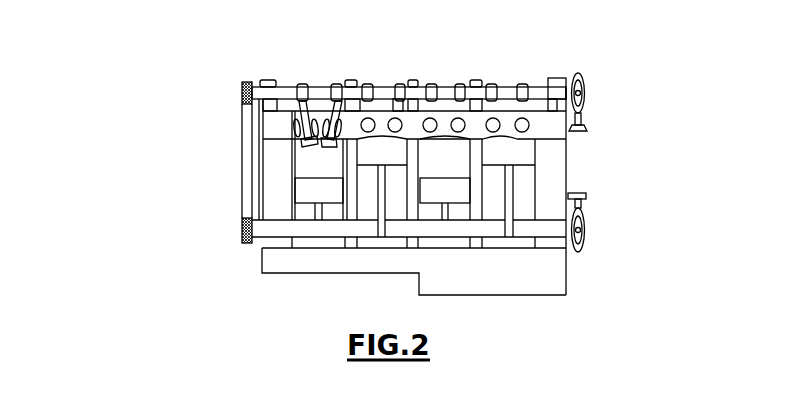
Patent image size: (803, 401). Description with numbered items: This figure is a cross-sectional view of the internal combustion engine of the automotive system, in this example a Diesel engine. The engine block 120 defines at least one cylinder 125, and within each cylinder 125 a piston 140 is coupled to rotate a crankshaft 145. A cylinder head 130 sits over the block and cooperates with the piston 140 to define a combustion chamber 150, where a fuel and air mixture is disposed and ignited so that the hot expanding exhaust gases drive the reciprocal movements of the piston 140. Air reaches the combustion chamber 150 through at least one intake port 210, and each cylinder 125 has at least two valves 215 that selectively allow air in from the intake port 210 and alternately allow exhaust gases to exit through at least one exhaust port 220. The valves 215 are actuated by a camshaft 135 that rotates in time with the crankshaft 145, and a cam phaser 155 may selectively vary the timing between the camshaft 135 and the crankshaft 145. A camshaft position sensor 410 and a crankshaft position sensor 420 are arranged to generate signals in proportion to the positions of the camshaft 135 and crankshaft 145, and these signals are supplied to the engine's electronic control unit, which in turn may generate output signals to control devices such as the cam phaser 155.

The engine block 120 is at (255, 180).
The cylinder 125 is at (422, 165).
The cylinder head 130 is at (262, 134).
The camshaft 135 is at (315, 85).
The piston 140 is at (448, 190).
The crankshaft 145 is at (287, 233).
The combustion chamber 150 is at (528, 148).
The cam phaser 155 is at (242, 90).
The intake port 210 is at (438, 115).
The valves 215 is at (310, 137).
The exhaust port 220 is at (386, 117).
The camshaft position sensor 410 is at (585, 130).
The crankshaft position sensor 420 is at (575, 197).